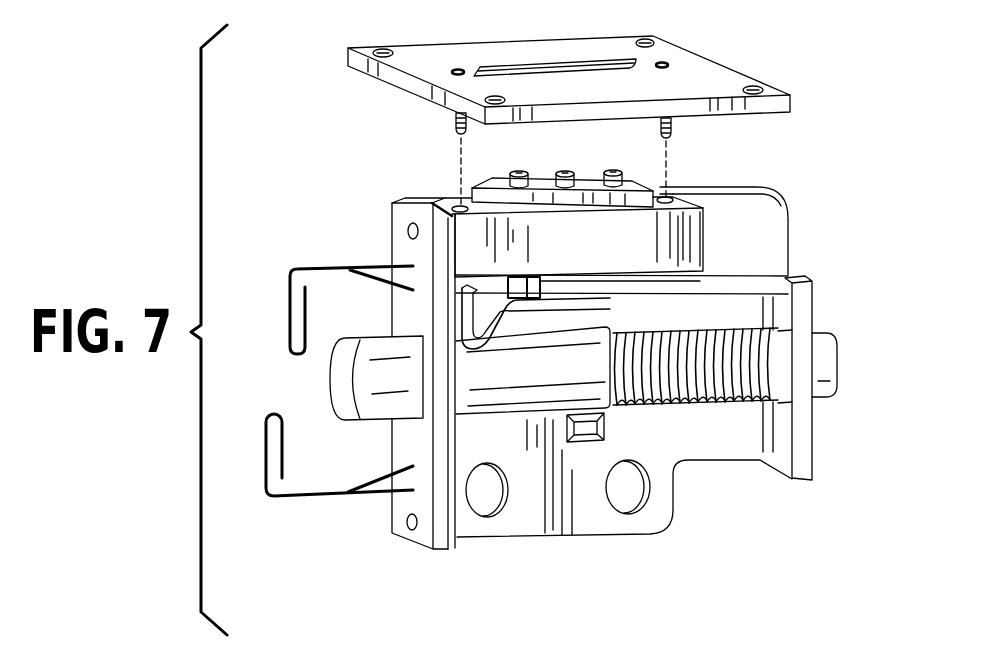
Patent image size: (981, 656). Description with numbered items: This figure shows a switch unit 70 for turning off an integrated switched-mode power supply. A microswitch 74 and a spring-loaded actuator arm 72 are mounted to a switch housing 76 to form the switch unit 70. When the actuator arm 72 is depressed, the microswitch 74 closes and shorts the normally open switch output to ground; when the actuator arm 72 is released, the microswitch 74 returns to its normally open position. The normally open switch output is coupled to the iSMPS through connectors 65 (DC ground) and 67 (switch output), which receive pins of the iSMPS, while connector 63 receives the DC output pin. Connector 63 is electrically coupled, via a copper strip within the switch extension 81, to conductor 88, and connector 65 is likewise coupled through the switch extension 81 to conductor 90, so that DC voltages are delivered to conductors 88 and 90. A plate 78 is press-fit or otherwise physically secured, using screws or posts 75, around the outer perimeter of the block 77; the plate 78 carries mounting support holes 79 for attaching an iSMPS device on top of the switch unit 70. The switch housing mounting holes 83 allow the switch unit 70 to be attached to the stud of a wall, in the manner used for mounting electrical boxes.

The connector 63 is at (519, 172).
The connector 65 is at (566, 172).
The connector 67 is at (621, 168).
The switch unit 70 is at (728, 532).
The spring-loaded actuator arm 72 is at (386, 352).
The microswitch 74 is at (701, 242).
The screws or posts 75 is at (454, 132).
The switch housing 76 is at (785, 208).
The block 77 is at (663, 182).
The plate 78 is at (393, 80).
The mounting support holes 79 is at (383, 48).
The switch extension 81 is at (457, 449).
The switch housing mounting holes 83 is at (488, 519).
The conductor 88 is at (322, 268).
The conductor 90 is at (327, 497).